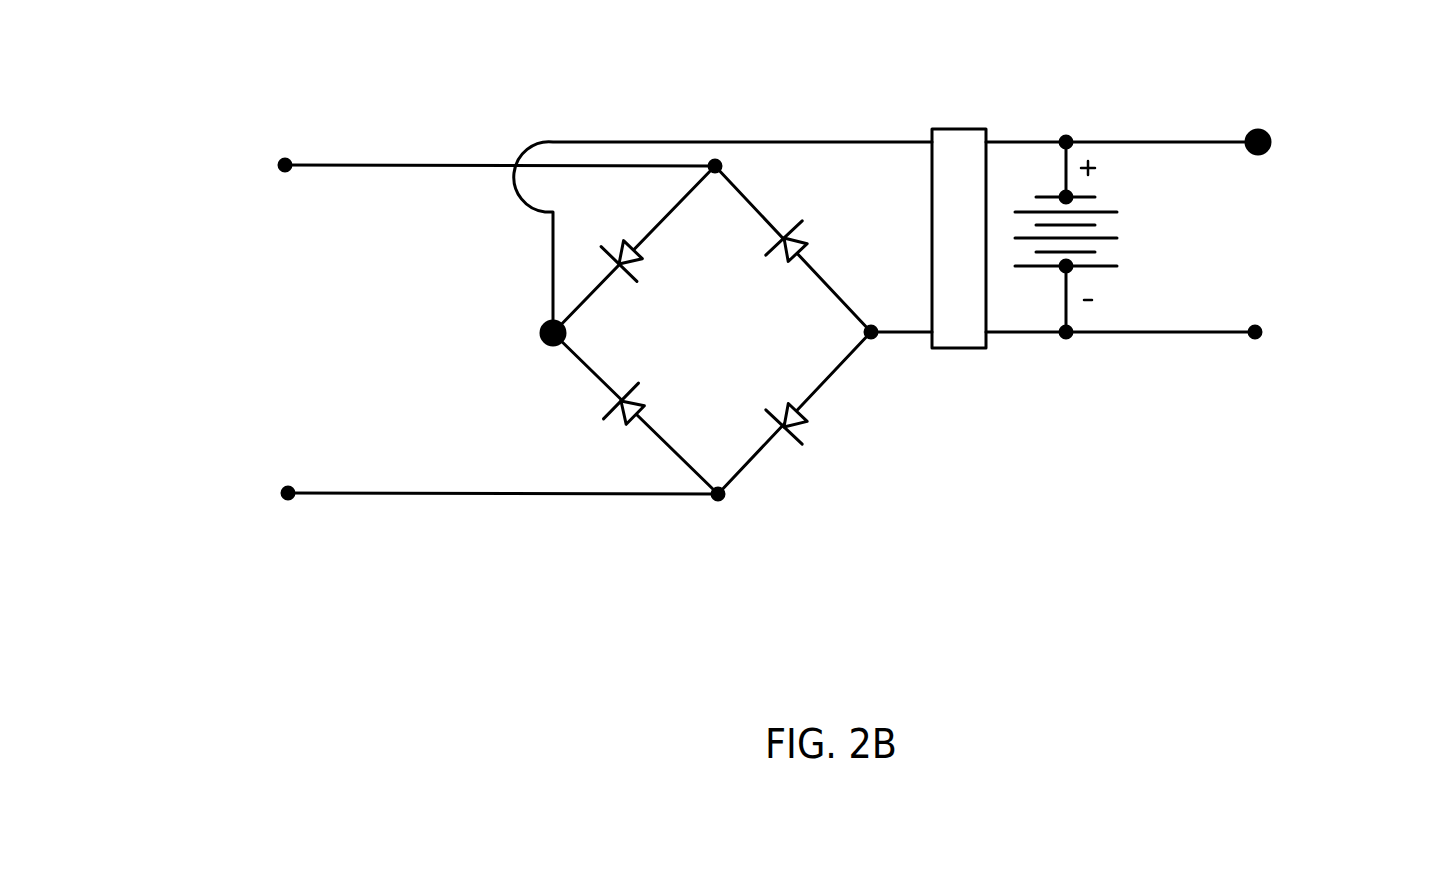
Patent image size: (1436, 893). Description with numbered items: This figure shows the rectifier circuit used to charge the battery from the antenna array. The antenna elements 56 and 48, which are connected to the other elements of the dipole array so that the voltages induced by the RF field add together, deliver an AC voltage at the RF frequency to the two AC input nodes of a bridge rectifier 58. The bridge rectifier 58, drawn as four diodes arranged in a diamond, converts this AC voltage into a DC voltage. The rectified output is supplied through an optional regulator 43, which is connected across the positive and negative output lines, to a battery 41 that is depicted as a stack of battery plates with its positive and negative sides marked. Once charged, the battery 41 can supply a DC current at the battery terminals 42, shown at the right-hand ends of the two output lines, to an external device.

The antenna element 56 is at (285, 165).
The antenna element 48 is at (288, 493).
The bridge rectifier 58 is at (745, 468).
The regulator 43 is at (967, 348).
The battery 41 is at (1112, 238).
The battery terminals 42 is at (1268, 145).